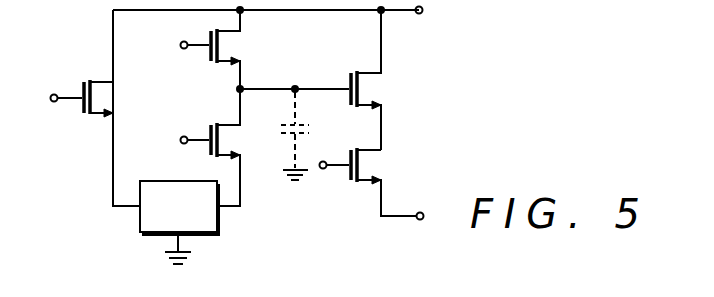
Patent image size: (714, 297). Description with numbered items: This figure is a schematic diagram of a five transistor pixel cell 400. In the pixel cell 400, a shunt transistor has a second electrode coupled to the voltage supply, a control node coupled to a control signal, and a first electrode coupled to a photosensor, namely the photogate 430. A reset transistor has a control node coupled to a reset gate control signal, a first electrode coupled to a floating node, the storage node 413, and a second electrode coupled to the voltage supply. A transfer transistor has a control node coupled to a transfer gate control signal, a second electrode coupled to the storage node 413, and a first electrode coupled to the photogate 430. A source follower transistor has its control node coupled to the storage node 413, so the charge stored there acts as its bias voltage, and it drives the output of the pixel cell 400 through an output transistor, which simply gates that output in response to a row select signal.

The 5T pixel cell 400 is at (297, 136).
The storage node 413 is at (295, 87).
The photogate 430 is at (173, 181).